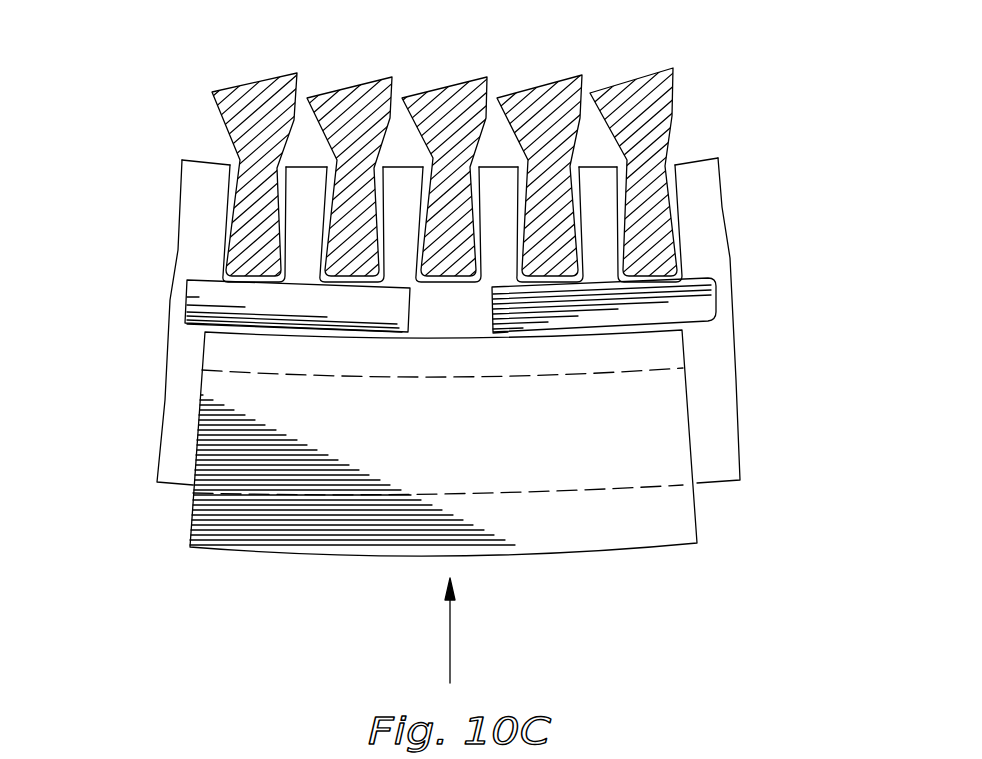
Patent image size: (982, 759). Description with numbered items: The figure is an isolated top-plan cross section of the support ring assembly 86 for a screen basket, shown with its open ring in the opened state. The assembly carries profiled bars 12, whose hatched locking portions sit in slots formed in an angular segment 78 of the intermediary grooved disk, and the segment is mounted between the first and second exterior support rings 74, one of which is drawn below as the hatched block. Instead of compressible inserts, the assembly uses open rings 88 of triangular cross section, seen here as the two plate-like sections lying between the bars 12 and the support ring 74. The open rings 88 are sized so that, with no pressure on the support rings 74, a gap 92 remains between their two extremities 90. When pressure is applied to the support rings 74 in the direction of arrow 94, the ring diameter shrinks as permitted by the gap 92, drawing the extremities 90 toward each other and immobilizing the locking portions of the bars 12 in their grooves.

The bars 12 is at (433, 100).
The integral rings 74 is at (252, 537).
The angular segments 78 is at (698, 212).
The support ring assembly 86 is at (133, 468).
The open rings 88 is at (223, 293).
The extremities 90 is at (427, 307).
The gap 92 is at (448, 318).
The arrow 94 is at (450, 637).